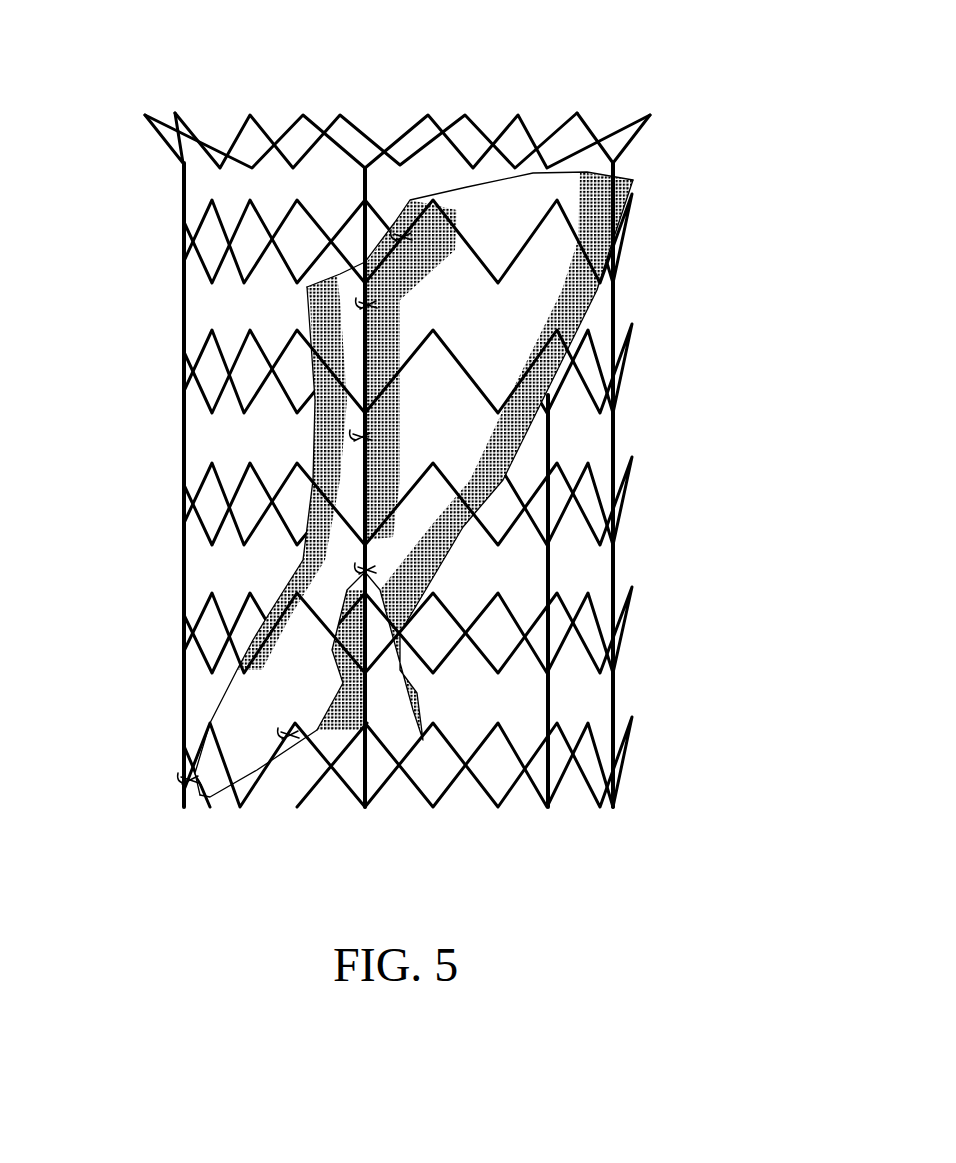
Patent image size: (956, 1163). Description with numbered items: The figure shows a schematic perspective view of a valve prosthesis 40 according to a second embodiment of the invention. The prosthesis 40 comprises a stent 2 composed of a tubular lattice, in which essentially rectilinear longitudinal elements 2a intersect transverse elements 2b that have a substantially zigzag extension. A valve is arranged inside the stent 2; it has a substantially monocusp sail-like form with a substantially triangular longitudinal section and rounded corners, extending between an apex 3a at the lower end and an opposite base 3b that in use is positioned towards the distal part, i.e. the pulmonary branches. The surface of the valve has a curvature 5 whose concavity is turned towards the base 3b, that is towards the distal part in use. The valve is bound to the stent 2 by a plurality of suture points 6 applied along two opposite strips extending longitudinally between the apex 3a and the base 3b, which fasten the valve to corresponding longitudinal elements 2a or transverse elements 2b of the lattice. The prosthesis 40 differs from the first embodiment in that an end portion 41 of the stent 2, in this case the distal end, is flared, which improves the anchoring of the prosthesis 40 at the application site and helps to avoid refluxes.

The stent 2 is at (409, 414).
The longitudinal elements 2a is at (546, 580).
The transverse elements 2b is at (300, 113).
The apex 3a is at (210, 797).
The base 3b is at (462, 205).
The curvature 5 is at (365, 458).
The suture points 6 is at (290, 727).
The valve prosthesis 40 is at (668, 82).
The end portion 41 is at (610, 127).